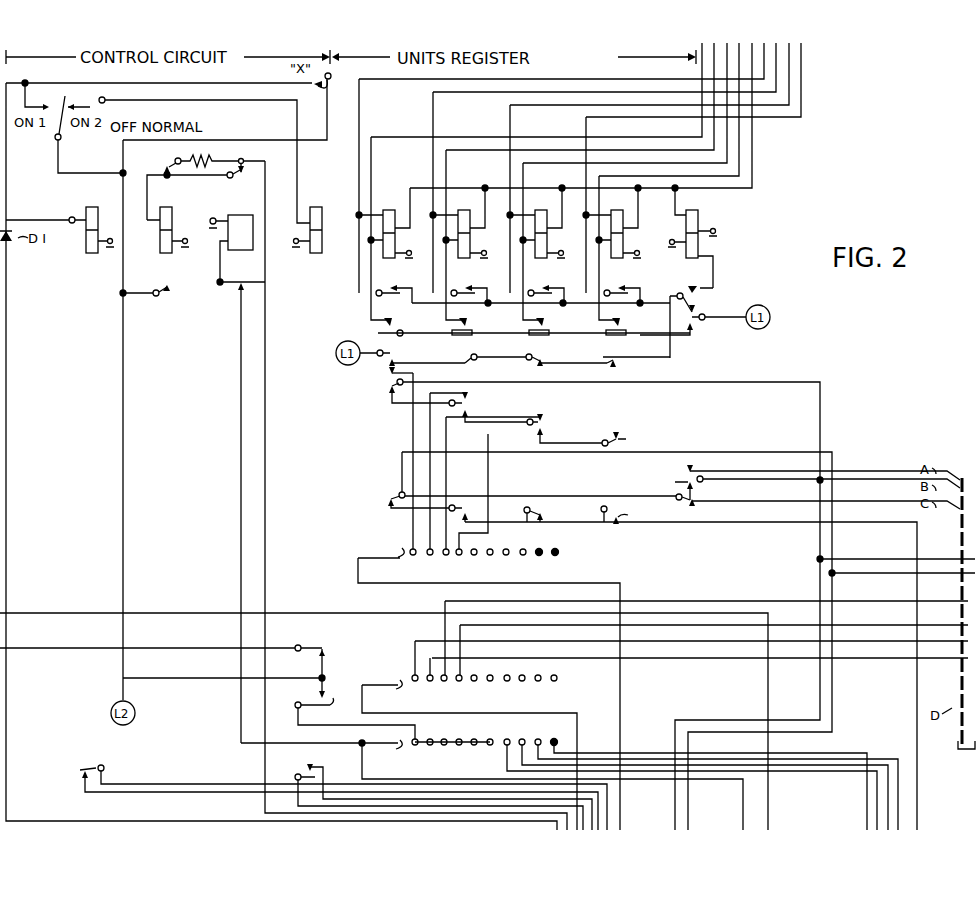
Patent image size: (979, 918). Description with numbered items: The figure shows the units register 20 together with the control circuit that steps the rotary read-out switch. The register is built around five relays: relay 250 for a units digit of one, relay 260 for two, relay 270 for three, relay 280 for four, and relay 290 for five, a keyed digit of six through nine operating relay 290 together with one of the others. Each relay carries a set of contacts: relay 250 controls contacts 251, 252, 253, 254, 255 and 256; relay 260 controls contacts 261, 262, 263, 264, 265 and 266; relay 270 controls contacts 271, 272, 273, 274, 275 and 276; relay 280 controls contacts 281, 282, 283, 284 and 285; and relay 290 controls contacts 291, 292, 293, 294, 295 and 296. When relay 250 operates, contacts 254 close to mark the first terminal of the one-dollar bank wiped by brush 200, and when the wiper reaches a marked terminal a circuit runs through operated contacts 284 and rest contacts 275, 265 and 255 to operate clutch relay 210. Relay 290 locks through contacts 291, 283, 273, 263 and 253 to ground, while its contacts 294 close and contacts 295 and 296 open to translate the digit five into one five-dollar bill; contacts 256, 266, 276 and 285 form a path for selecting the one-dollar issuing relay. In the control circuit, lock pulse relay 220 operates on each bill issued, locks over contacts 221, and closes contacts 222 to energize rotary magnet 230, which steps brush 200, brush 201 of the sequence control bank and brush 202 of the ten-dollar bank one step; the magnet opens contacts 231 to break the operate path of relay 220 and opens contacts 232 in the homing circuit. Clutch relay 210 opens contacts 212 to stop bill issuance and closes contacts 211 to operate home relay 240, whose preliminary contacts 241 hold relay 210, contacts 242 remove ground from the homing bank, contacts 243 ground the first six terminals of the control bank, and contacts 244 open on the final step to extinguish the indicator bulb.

The units register 20 is at (580, 115).
The brush 200 is at (370, 540).
The brush 201 is at (372, 748).
The brush 202 is at (372, 690).
The clutch relay 210 is at (106, 206).
The contacts 211 is at (106, 103).
The contacts 212 is at (74, 774).
The lock pulse relay 220 is at (180, 206).
The contacts 221 is at (152, 168).
The contacts 222 is at (178, 296).
The rotary magnet 230 is at (256, 214).
The contacts 231 is at (248, 169).
The contacts 232 is at (236, 291).
The home relay 240 is at (330, 206).
The X or preliminary contacts 241 is at (315, 95).
The contacts 242 is at (332, 654).
The contacts 243 is at (355, 718).
The contacts 244 is at (310, 767).
The relay 250 is at (406, 208).
The relay contact 251 is at (383, 287).
The relay contact 252 is at (404, 321).
The contacts 253 is at (396, 364).
The contacts 254 is at (384, 377).
The rest contacts 255 is at (378, 387).
The contacts 256 is at (380, 492).
The relay 260 is at (481, 208).
The relay contact 261 is at (458, 287).
The relay contact 262 is at (479, 321).
The contacts 263 is at (470, 362).
The relay contact 264 is at (470, 398).
The rest contacts 265 is at (472, 406).
The contacts 266 is at (480, 513).
The relay 270 is at (558, 208).
The relay contact 271 is at (535, 287).
The relay contact 272 is at (556, 321).
The contacts 273 is at (544, 364).
The relay contact 274 is at (546, 407).
The rest contacts 275 is at (545, 430).
The contacts 276 is at (548, 513).
The relay 280 is at (634, 208).
The relay contact 281 is at (611, 287).
The relay contact 282 is at (632, 321).
The contacts 283 is at (624, 366).
The operated contacts 284 is at (626, 440).
The contacts 285 is at (691, 665).
The relay 290 is at (710, 208).
The contacts 291 is at (665, 293).
The contacts 292 is at (696, 312).
The relay contact 293 is at (694, 326).
The contacts 294 is at (684, 472).
The contacts 295 is at (800, 486).
The contacts 296 is at (706, 499).